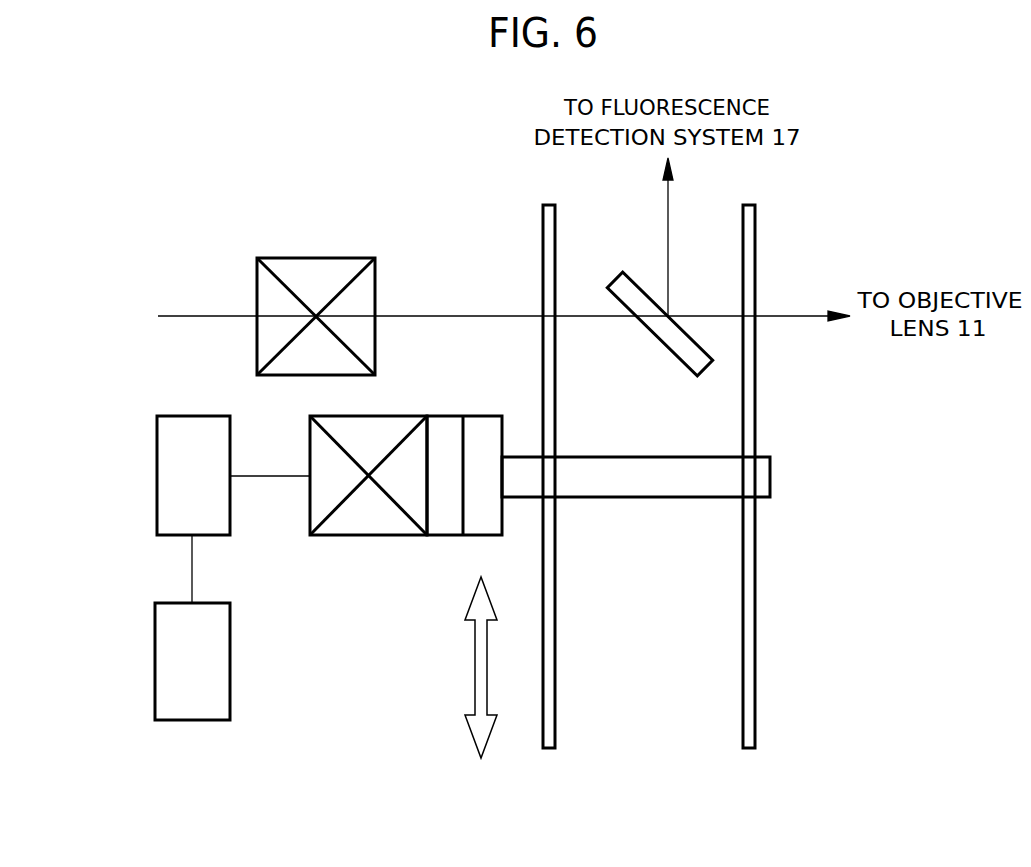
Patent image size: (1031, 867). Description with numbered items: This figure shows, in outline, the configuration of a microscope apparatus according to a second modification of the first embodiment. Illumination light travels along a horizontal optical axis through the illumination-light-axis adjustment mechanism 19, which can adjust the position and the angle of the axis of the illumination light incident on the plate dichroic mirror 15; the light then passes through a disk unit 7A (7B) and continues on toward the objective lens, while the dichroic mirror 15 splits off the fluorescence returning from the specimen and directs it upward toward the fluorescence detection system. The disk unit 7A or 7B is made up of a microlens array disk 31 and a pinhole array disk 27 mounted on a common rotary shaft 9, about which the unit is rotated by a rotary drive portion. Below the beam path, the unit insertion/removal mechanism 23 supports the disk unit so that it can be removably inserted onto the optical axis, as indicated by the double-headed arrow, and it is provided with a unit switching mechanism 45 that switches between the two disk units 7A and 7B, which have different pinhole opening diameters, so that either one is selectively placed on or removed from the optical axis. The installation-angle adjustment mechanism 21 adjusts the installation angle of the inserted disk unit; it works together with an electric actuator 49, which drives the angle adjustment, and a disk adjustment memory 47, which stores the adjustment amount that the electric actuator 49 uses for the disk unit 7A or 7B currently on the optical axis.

The illumination-light-axis adjustment mechanism 19 is at (310, 258).
The installation-angle adjustment mechanism 21 is at (357, 537).
The unit switching mechanism 45 is at (442, 537).
The unit insertion/removal mechanism 23 is at (475, 663).
The electric actuator 49 is at (157, 470).
The disk adjustment memory 47 is at (155, 652).
The rotary shaft 9 is at (770, 470).
The dichroic mirror 15 is at (672, 355).
The microlens array disk 31 is at (555, 648).
The pinhole array disk 27 is at (755, 630).
The disk unit 7A is at (681, 514).
The disk unit 7B is at (788, 766).